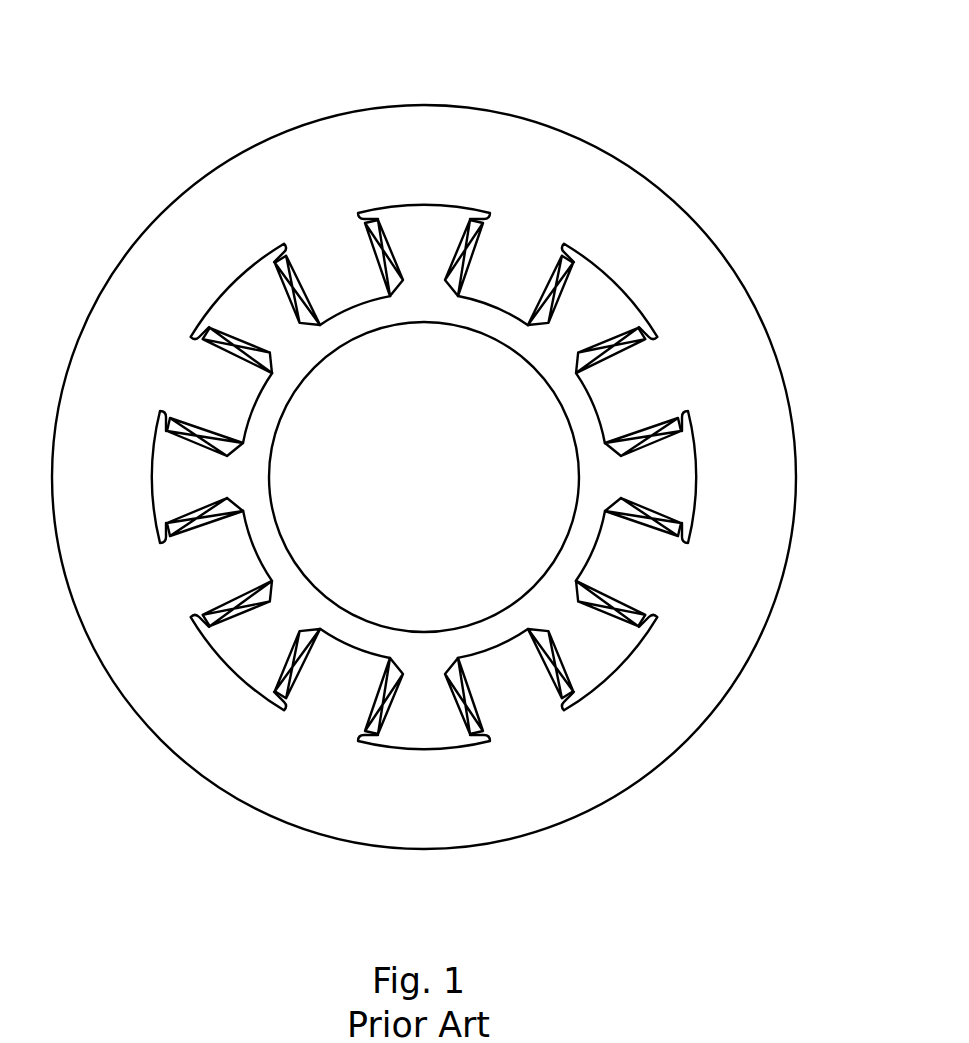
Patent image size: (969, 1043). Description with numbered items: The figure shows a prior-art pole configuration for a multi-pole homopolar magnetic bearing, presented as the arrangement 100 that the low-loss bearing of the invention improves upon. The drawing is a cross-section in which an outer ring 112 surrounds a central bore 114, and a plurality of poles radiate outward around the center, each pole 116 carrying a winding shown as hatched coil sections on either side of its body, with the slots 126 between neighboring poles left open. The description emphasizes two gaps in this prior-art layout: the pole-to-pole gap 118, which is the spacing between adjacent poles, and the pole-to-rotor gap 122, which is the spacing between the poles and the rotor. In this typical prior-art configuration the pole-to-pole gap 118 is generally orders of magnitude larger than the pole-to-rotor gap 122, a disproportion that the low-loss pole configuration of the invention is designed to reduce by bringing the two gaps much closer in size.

The motor stator assembly 100 is at (158, 191).
The outer housing / back iron ring 112 is at (770, 289).
The central bore 114 is at (447, 491).
The coil winding 116 is at (262, 649).
The pole-to-pole gap 118 is at (426, 240).
The pole-to-rotor gap 122 is at (578, 543).
The slot 126 is at (516, 278).